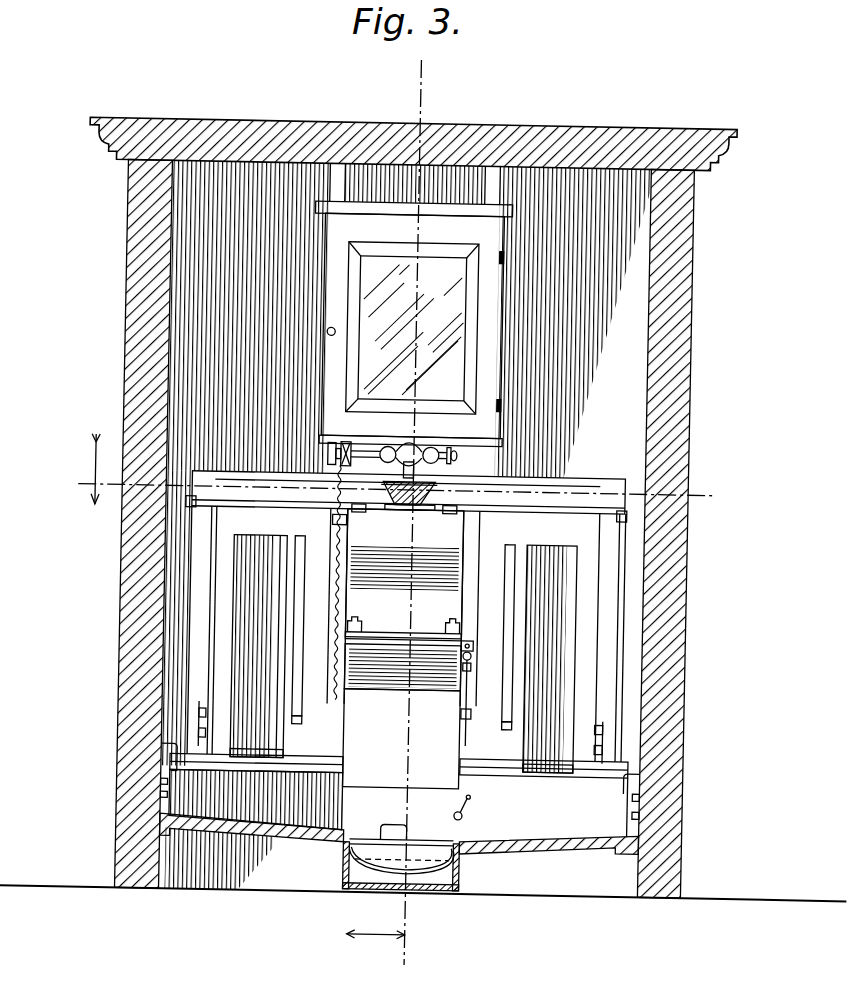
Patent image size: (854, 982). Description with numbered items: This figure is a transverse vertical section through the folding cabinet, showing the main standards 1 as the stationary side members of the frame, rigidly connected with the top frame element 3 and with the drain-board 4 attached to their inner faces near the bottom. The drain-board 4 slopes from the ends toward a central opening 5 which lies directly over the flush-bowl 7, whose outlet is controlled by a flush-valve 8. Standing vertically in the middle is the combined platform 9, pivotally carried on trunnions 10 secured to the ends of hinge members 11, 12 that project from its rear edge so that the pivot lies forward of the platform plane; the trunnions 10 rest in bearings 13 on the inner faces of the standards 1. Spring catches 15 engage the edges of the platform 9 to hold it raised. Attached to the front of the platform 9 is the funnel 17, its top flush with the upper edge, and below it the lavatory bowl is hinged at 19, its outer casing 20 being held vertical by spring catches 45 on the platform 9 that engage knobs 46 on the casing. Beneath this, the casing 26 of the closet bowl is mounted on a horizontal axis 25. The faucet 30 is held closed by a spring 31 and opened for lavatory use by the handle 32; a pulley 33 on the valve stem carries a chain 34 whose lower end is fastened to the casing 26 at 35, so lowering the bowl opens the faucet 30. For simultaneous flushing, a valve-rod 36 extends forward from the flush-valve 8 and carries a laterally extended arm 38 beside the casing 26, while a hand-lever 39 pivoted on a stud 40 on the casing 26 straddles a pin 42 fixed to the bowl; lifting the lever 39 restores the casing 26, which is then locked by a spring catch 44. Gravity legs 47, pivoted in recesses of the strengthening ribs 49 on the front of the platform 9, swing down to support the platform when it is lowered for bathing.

The main standards 1 is at (690, 375).
The top frame element 3 is at (492, 110).
The drain-board 4 is at (540, 826).
The central opening 5 is at (330, 843).
The flush-bowl 7 is at (416, 865).
The flush-valve 8 is at (375, 952).
The platform 9 is at (403, 654).
The trunnions 10 is at (254, 752).
The hinge member 11 is at (600, 790).
The hinge member 12 is at (292, 776).
The bearings 13 is at (172, 750).
The spring catches 15 is at (198, 510).
The funnel 17 is at (440, 483).
The hinge 19 is at (450, 626).
The outer casing 20 is at (403, 607).
The horizontal axis 25 is at (330, 776).
The casing 26 is at (401, 739).
The faucet 30 is at (411, 438).
The spring 31 is at (340, 444).
The handle 32 is at (455, 452).
The pulley 33 is at (336, 462).
The chain 34 is at (352, 596).
The chain attachment point 35 is at (402, 667).
The valve-rod 36 is at (458, 813).
The laterally extended arm 38 is at (466, 800).
The hand-lever 39 is at (474, 690).
The stud 40 is at (468, 716).
The pin 42 is at (445, 656).
The spring catch 44 is at (473, 652).
The spring catches 45 is at (413, 511).
The knobs 46 is at (334, 520).
The gravity legs 47 is at (296, 636).
The strengthening ribs 49 is at (398, 734).